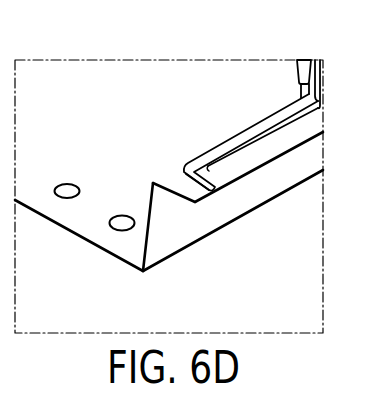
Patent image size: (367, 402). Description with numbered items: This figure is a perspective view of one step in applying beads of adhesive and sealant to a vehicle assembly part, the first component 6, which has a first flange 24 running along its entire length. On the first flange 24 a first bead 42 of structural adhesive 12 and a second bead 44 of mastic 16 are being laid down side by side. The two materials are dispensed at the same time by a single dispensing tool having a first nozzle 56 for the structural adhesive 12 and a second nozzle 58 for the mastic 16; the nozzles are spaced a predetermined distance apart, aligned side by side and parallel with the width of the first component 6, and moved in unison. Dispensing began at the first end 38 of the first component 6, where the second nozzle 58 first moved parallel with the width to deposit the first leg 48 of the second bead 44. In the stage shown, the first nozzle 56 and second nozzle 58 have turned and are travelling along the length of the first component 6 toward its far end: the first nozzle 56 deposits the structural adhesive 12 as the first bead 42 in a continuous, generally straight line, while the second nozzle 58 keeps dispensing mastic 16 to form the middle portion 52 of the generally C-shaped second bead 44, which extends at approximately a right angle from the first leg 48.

The first component 6 is at (62, 210).
The structural adhesive 12 is at (233, 201).
The first bead 42 is at (253, 169).
The mastic 16 is at (224, 139).
The second bead 44 is at (222, 141).
The first flange 24 is at (173, 186).
The first end 38 is at (106, 253).
The first leg 48 is at (199, 191).
The middle portion 52 is at (279, 108).
The first nozzle 56 is at (317, 60).
The second nozzle 58 is at (298, 61).